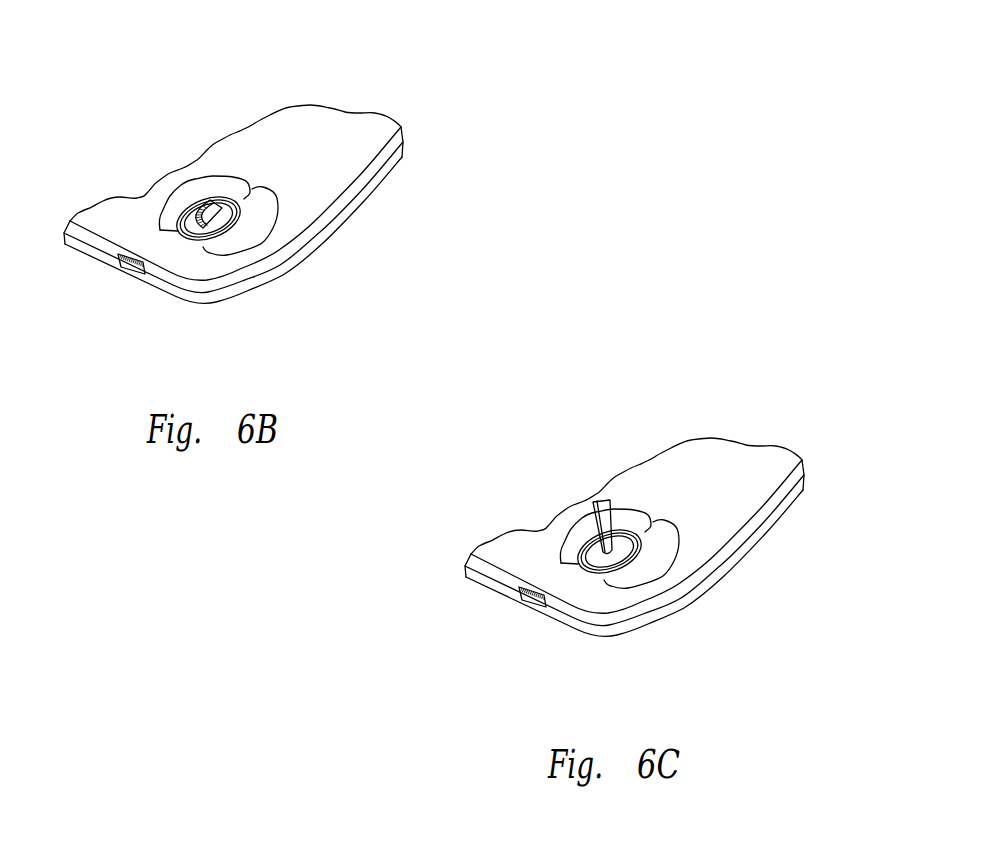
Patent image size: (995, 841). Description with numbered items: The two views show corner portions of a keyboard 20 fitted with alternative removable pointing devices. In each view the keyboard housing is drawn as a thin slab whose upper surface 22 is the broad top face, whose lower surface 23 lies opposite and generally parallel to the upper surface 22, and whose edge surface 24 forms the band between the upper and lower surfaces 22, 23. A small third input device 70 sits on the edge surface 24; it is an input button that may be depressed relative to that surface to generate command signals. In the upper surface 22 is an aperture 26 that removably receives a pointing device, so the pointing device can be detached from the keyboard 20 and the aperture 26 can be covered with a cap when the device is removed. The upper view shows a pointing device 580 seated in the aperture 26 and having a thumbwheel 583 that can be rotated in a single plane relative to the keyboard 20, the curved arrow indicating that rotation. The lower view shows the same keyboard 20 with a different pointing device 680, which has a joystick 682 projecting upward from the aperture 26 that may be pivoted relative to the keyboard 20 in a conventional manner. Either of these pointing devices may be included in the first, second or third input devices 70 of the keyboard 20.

In FIG. 6B, the keyboard 20 is at (358, 90).
In FIG. 6C, the keyboard 20 is at (643, 510).
In FIG. 6B, the upper surface 22 is at (361, 134).
In FIG. 6C, the upper surface 22 is at (657, 502).
In FIG. 6B, the lower surface 23 is at (383, 177).
In FIG. 6C, the lower surface 23 is at (707, 590).
In FIG. 6B, the edge surface 24 is at (84, 247).
In FIG. 6C, the edge surface 24 is at (620, 567).
In FIG. 6B, the aperture 26 is at (177, 233).
In FIG. 6C, the aperture 26 is at (596, 598).
In FIG. 6B, the third input device 70 is at (130, 265).
In FIG. 6C, the third input device 70 is at (501, 638).
In FIG. 6B, the thumbwheel 583 is at (206, 203).
In FIG. 6B, the pointing device 580 is at (218, 228).
In FIG. 6C, the joystick 682 is at (598, 501).
In FIG. 6C, the pointing device 680 is at (655, 503).